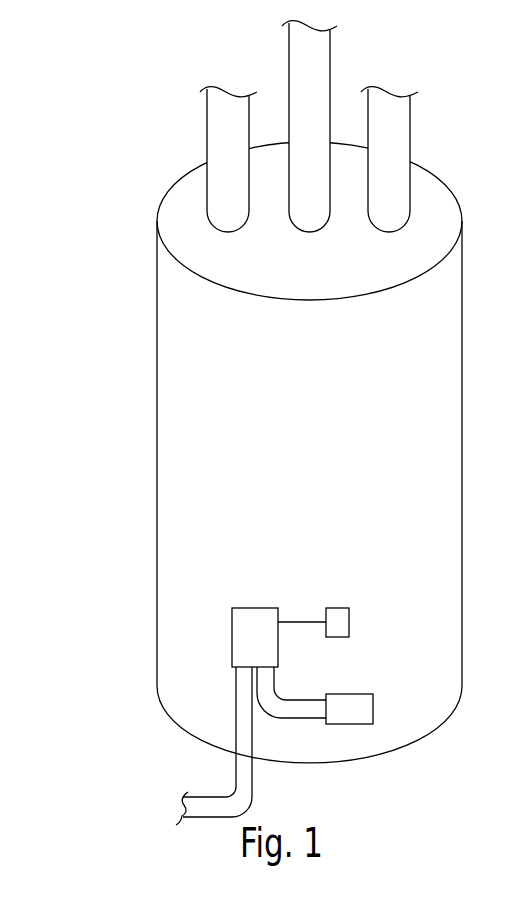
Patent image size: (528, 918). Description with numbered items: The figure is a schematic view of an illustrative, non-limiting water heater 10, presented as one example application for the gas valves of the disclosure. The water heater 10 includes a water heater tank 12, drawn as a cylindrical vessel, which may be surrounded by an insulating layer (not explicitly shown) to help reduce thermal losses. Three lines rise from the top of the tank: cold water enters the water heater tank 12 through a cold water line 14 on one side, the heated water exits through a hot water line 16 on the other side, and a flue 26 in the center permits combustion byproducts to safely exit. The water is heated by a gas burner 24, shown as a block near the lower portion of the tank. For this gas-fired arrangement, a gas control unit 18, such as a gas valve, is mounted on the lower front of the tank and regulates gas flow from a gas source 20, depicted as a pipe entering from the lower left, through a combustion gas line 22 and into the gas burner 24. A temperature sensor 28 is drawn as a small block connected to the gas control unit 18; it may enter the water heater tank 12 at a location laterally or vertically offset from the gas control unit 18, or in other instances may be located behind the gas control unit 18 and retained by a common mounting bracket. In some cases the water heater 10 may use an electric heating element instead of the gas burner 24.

The water heater 10 is at (110, 216).
The water heater tank 12 is at (178, 455).
The cold water line 14 is at (217, 120).
The hot water line 16 is at (402, 123).
The gas control unit 18 is at (255, 608).
The gas source 20 is at (232, 793).
The combustion gas line 22 is at (303, 719).
The gas burner 24 is at (350, 694).
The flue 26 is at (313, 53).
The temperature sensor 28 is at (338, 608).